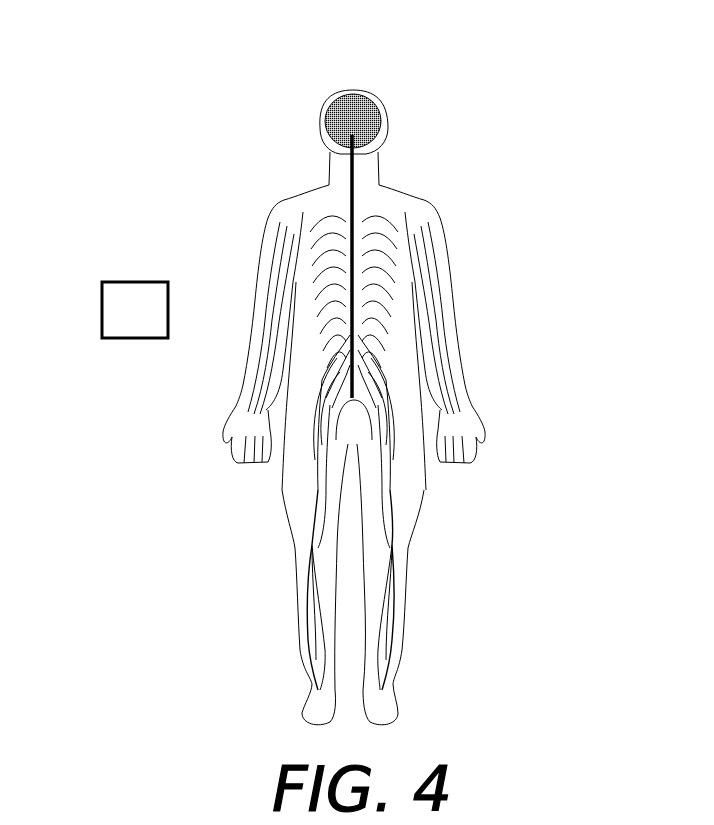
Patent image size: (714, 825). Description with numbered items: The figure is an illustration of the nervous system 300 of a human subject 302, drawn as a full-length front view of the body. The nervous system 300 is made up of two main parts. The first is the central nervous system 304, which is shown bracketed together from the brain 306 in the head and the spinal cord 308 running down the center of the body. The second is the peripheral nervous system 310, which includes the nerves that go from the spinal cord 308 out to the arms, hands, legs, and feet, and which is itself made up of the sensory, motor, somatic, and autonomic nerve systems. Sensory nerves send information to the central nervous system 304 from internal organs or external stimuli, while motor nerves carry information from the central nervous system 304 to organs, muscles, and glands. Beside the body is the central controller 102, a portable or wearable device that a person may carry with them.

The central controller 102 is at (135, 310).
The nervous system 300 is at (180, 186).
The human subject 302 is at (246, 508).
The central nervous system 304 is at (505, 120).
The brain 306 is at (376, 120).
The spinal cord 308 is at (352, 197).
The peripheral nervous system 310 is at (320, 433).